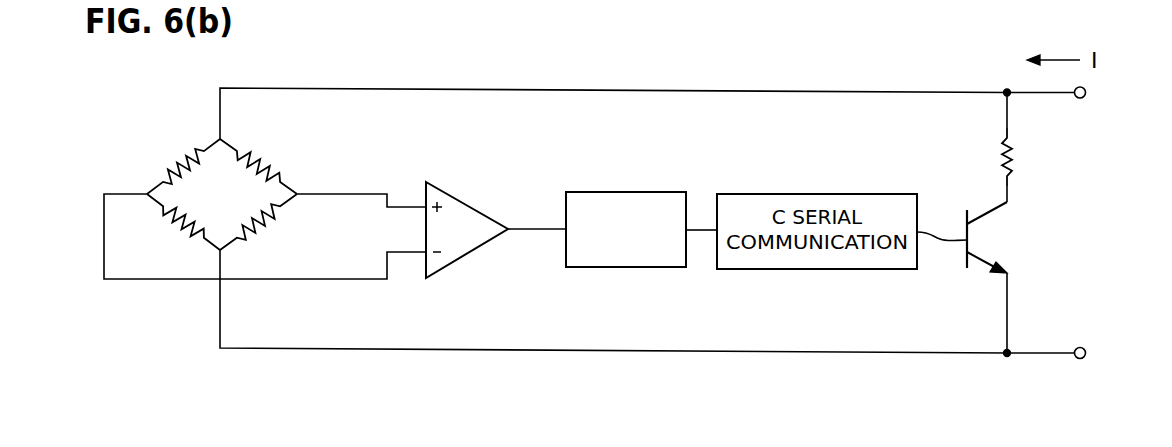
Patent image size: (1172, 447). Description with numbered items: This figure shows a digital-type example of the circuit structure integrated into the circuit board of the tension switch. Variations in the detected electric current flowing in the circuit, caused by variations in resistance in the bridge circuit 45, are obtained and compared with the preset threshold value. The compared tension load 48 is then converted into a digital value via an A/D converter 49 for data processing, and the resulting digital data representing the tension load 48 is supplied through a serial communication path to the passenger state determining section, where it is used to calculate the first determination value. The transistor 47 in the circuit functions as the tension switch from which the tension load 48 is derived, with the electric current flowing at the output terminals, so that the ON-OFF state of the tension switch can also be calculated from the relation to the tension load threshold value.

The bridge circuit 45 is at (192, 152).
The transistor 47 is at (983, 247).
The tension load 48 is at (535, 229).
The A/D converter 49 is at (633, 267).